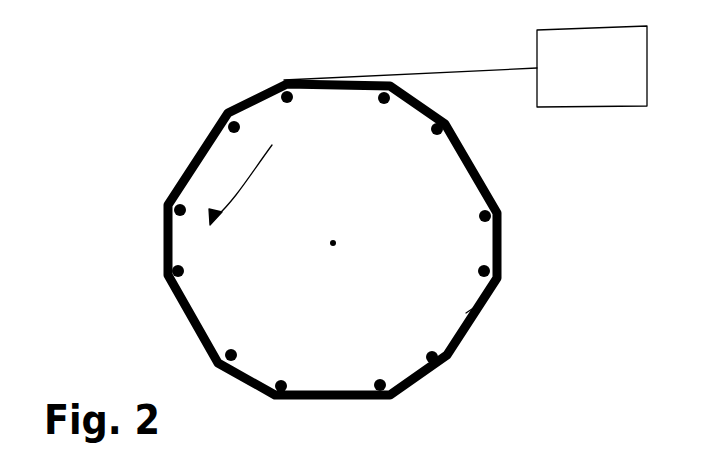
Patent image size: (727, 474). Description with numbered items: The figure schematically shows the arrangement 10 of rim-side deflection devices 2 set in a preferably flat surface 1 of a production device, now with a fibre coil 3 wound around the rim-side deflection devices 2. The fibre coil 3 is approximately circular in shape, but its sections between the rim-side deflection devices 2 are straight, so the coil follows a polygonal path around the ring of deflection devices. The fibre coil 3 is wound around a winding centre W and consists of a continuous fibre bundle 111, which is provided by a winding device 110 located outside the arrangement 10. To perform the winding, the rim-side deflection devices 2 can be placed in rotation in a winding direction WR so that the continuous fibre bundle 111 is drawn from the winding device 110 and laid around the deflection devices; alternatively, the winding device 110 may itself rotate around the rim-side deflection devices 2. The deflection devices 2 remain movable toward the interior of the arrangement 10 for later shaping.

The surface 1 is at (120, 130).
The rim-side deflection devices 2 is at (440, 143).
The fibre coil 3 is at (472, 307).
The arrangement 10 is at (156, 247).
The winding device 110 is at (628, 111).
The continuous fibre bundle 111 is at (415, 66).
The winding direction WR is at (232, 172).
The winding centre W is at (333, 243).